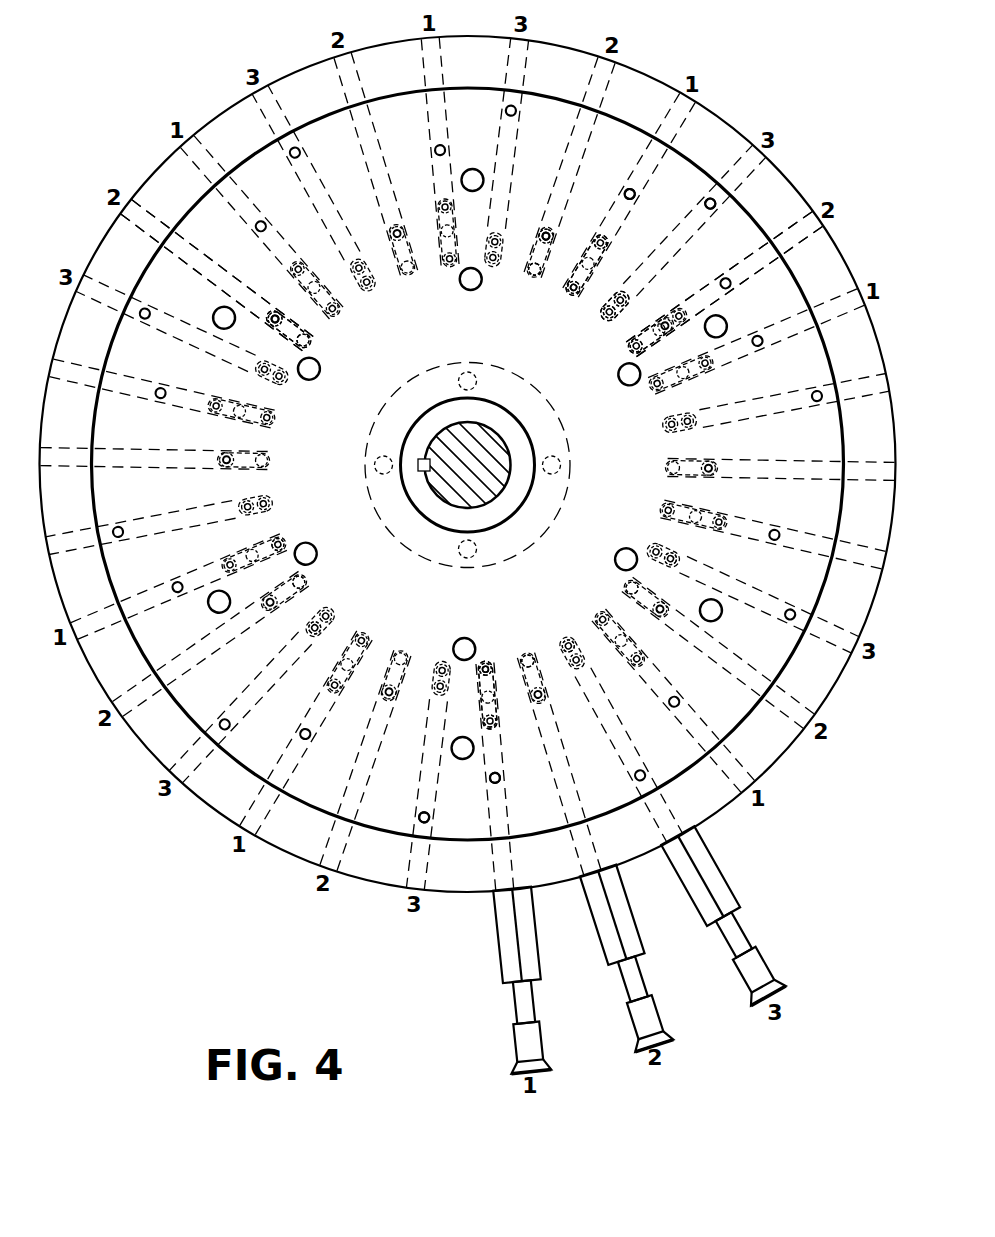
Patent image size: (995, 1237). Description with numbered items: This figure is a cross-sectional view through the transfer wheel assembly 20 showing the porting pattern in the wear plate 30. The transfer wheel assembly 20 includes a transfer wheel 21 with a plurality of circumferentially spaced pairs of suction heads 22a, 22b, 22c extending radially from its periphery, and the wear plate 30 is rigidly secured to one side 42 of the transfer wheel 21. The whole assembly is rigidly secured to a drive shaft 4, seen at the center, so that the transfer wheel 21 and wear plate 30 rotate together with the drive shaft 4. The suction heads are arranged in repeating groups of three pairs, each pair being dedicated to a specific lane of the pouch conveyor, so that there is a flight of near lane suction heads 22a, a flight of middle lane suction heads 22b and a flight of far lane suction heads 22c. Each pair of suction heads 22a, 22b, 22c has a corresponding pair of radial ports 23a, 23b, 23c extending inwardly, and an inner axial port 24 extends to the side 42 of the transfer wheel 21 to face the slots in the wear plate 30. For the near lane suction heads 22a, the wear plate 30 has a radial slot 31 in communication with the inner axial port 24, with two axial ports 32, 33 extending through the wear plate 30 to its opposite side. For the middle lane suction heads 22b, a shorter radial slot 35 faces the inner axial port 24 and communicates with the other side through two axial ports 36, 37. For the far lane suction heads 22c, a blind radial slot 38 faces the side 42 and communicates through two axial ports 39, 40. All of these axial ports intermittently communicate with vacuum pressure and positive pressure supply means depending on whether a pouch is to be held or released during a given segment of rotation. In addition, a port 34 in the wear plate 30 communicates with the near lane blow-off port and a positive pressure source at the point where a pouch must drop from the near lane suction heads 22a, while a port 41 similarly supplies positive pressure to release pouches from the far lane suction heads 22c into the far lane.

The drive shaft 4 is at (491, 437).
The transfer wheel assembly 20 is at (467, 489).
The transfer wheel 21 is at (723, 797).
The near lane suction heads 22a is at (516, 1067).
The middle lane suction heads 22b is at (666, 1032).
The far lane suction heads 22c is at (785, 981).
The near lane radial ports 23a is at (682, 106).
The radial ports 23b is at (607, 80).
The radial ports 23c is at (733, 158).
The inner axial port 24 is at (545, 255).
The wear plate 30 is at (742, 704).
The radial slot 31 is at (568, 293).
The axial port 32 is at (574, 292).
The axial port 33 is at (598, 245).
The port 34 is at (624, 193).
The radial slot 35 is at (535, 654).
The axial port 36 is at (531, 271).
The axial port 37 is at (546, 232).
The radial slot 38 is at (606, 330).
The axial port 39 is at (600, 336).
The axial port 40 is at (605, 323).
The port 41 is at (704, 203).
The side of the transfer wheel 42 is at (772, 213).